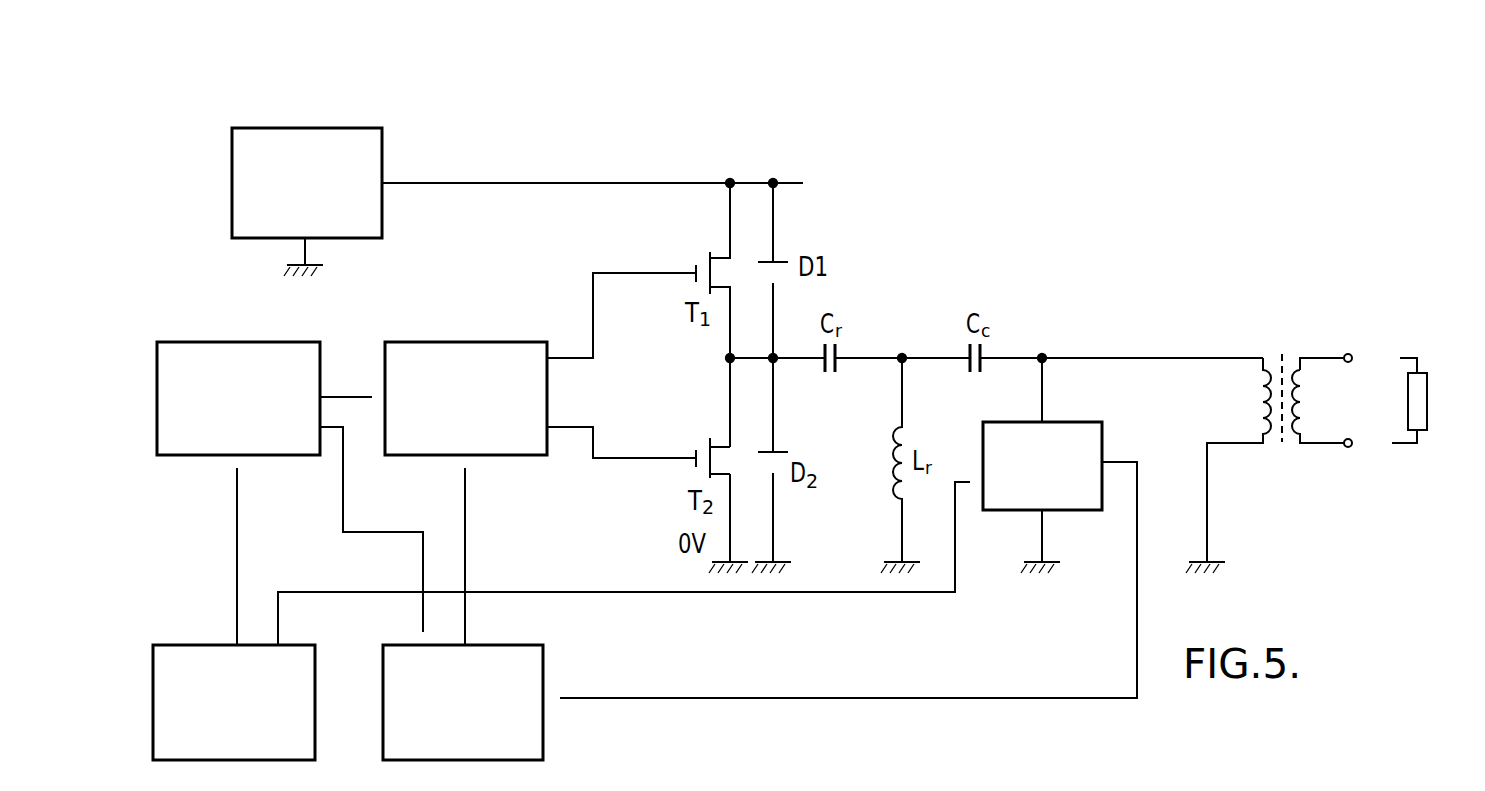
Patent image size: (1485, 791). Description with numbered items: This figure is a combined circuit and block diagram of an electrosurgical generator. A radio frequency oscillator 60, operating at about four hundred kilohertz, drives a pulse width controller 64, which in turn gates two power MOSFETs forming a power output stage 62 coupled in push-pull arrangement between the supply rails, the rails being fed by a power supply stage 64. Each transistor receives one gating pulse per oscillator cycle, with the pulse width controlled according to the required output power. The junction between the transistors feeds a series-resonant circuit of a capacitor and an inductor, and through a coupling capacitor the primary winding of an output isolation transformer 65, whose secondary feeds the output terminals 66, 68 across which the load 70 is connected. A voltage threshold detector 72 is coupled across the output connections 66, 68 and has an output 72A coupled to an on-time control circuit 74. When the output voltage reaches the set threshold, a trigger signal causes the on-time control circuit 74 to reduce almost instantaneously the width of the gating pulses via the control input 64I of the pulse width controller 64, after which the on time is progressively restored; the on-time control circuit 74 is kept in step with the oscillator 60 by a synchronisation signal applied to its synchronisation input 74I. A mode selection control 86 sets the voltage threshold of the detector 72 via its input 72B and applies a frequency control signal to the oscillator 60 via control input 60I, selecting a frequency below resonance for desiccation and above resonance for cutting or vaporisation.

The radio frequency oscillator 60 is at (199, 342).
The control input 60I is at (237, 524).
The power output stage 62 is at (757, 150).
The pulse width controller 64 is at (382, 162).
The control input 64I is at (467, 488).
The output isolation transformer 65 is at (1282, 460).
The output terminal 66 is at (718, 367).
The output terminal 68 is at (1346, 449).
The load 70 is at (1427, 376).
The voltage threshold detector 72 is at (1104, 428).
The output 72A is at (1108, 461).
The threshold set input 72B is at (957, 470).
The on-time control circuit 74 is at (545, 655).
The synchronisation input 74I is at (421, 615).
The mode selection control 86 is at (196, 645).